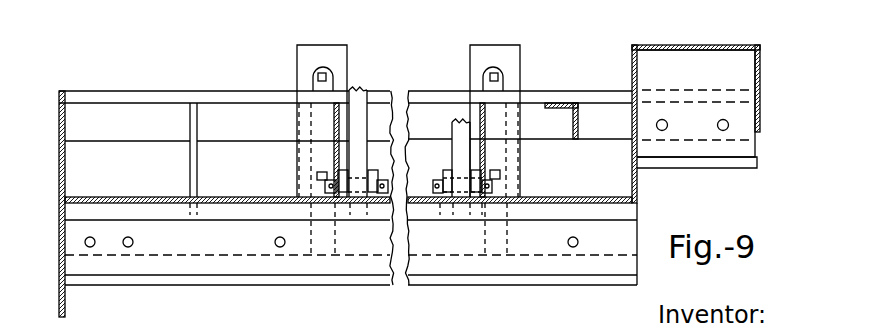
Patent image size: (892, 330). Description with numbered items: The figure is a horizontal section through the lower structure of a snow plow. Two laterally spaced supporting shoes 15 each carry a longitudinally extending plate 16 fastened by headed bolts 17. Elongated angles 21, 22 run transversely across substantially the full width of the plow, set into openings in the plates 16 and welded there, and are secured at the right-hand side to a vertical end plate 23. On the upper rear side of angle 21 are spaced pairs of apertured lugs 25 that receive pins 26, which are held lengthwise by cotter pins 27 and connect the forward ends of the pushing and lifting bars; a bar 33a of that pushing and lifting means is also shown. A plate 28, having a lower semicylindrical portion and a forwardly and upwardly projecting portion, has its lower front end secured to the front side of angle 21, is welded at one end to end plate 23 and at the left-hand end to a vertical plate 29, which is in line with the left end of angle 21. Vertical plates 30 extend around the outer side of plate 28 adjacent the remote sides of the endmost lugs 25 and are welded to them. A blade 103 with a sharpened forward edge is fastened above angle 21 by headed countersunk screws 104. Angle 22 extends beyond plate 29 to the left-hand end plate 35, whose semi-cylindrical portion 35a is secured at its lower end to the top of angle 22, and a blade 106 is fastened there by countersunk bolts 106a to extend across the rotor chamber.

The supporting shoe 15 is at (317, 44).
The plate 16 is at (312, 82).
The headed bolt 17 is at (317, 70).
The angle 21 is at (110, 212).
The angle 22 is at (162, 112).
The end plate 23 is at (65, 172).
The lug 25 is at (450, 172).
The pin 26 is at (318, 190).
The cotter pin 27 is at (387, 203).
The plate 28 is at (147, 196).
The plate 29 is at (632, 184).
The plate 30 is at (336, 132).
The bar 33a is at (362, 84).
The end plate 35 is at (762, 72).
The semi-cylindrical portion 35a is at (722, 45).
The blade 103 is at (373, 266).
The headed countersunk screw 104 is at (274, 242).
The blade 106 is at (743, 163).
The countersunk bolt 106a is at (665, 131).